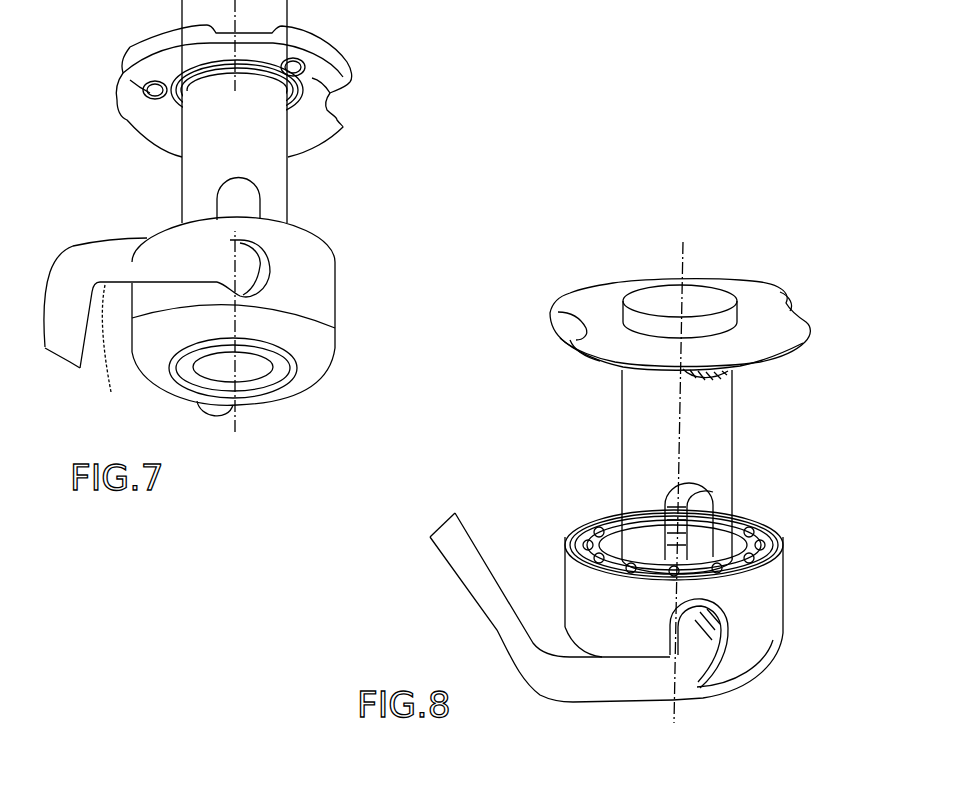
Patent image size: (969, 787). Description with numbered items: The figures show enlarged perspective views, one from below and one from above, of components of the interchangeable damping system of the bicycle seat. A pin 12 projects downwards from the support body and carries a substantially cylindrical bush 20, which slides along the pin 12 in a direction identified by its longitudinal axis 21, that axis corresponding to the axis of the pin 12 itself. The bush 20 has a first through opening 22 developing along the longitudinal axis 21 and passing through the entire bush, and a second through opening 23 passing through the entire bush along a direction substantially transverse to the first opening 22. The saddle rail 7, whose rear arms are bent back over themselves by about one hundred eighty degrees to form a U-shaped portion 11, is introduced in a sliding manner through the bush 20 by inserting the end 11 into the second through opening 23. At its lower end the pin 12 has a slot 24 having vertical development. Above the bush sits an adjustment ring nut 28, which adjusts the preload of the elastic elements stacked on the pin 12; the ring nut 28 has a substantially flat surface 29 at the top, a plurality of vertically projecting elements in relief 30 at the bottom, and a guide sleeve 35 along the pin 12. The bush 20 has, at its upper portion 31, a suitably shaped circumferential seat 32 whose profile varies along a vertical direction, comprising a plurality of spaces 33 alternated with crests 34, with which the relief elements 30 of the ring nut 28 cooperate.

In FIG. 7, the saddle rail 7 is at (71, 246).
In FIG. 8, the saddle rail 7 is at (440, 597).
In FIG. 7, the U-shaped portion 11 is at (110, 350).
In FIG. 8, the U-shaped portion 11 is at (583, 700).
In FIG. 7, the pin 12 is at (289, 192).
In FIG. 8, the pin 12 is at (720, 428).
In FIG. 7, the bush 20 is at (337, 288).
In FIG. 8, the bush 20 is at (778, 622).
In FIG. 7, the longitudinal axis 21 is at (238, 133).
In FIG. 8, the longitudinal axis 21 is at (693, 263).
In FIG. 8, the first through opening 22 is at (630, 546).
In FIG. 8, the second through opening 23 is at (714, 614).
In FIG. 7, the slot 24 is at (248, 201).
In FIG. 8, the slot 24 is at (702, 508).
In FIG. 7, the ring nut 28 is at (323, 41).
In FIG. 8, the ring nut 28 is at (593, 352).
In FIG. 8, the flat surface 29 is at (762, 295).
In FIG. 7, the elements in relief 30 is at (283, 61).
In FIG. 7, the upper portion 31 is at (354, 255).
In FIG. 8, the upper portion 31 is at (807, 583).
In FIG. 8, the circumferential seat 32 is at (773, 512).
In FIG. 8, the spaces 33 is at (583, 550).
In FIG. 8, the crests 34 is at (585, 514).
In FIG. 7, the guide sleeve 35 is at (170, 127).
In FIG. 8, the guide sleeve 35 is at (702, 380).